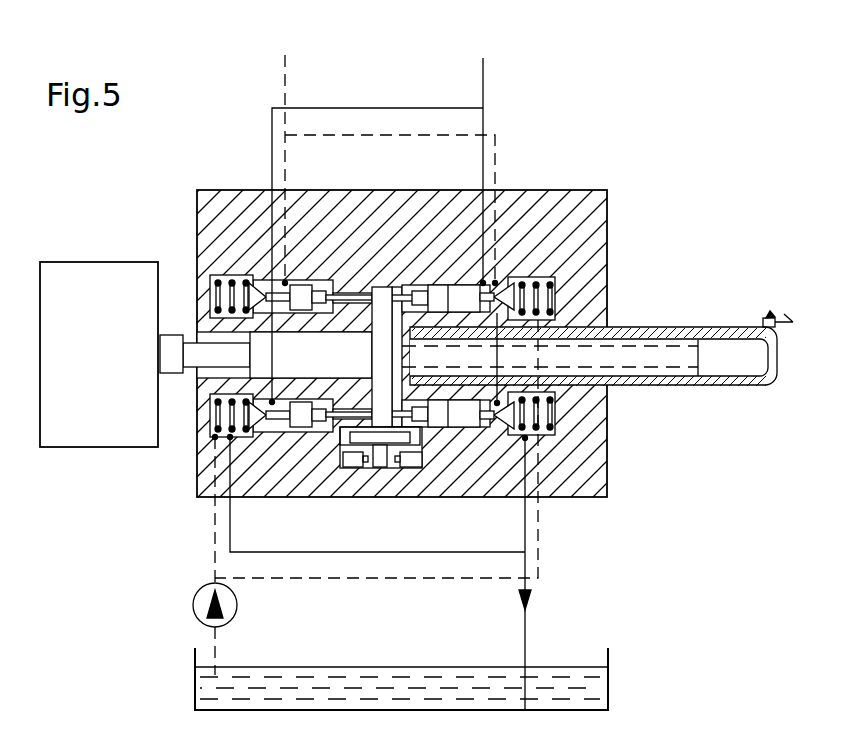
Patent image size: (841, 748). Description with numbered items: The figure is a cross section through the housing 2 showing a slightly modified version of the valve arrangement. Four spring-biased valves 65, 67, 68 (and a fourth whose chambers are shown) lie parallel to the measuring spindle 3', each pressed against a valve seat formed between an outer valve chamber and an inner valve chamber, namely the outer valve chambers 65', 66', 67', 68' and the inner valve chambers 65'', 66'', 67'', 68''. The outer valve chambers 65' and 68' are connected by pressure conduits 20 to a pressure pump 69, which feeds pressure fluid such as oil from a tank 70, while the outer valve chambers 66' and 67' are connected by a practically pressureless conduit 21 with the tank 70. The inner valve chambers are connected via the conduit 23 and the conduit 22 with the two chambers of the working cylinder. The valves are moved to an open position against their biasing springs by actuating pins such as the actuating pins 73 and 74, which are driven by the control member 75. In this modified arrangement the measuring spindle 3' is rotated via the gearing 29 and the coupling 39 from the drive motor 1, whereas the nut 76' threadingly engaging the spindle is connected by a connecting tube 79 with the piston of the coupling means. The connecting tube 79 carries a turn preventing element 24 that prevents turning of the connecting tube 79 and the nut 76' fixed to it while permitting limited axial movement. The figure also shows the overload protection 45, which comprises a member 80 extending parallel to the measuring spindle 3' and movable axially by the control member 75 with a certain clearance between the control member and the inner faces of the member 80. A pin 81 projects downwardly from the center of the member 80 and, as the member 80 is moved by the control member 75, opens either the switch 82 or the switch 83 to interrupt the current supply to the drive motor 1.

The drive motor 1 is at (85, 275).
The housing 2 is at (553, 190).
The measuring spindle 3' is at (550, 331).
The pressure conduits 20 is at (213, 560).
The pressureless conduit 21 is at (527, 512).
The conduit 22 is at (291, 70).
The conduit 23 is at (484, 78).
The turn preventing element 24 is at (768, 318).
The gearing 29 is at (175, 335).
The coupling 39 is at (175, 378).
The overload protection 45 is at (380, 472).
The valve 65 is at (530, 239).
The outer valve chamber 65' is at (556, 234).
The inner valve chamber 65'' is at (467, 229).
The outer valve chamber 66' is at (583, 413).
The inner valve chamber 66'' is at (571, 431).
The valve 67 is at (208, 444).
The outer valve chamber 67' is at (212, 433).
The inner valve chamber 67'' is at (267, 469).
The valve 68 is at (209, 258).
The outer valve chamber 68' is at (211, 268).
The inner valve chamber 68'' is at (259, 229).
The pressure pump 69 is at (237, 605).
The tank 70 is at (360, 665).
The actuating pin 73 is at (298, 427).
The actuating pin 74 is at (300, 285).
The control member 75 is at (380, 287).
The nut 76' is at (436, 235).
The connecting tube 79 is at (740, 386).
The member 80 is at (455, 427).
The pin 81 is at (398, 462).
The switch 82 is at (350, 467).
The switch 83 is at (412, 467).